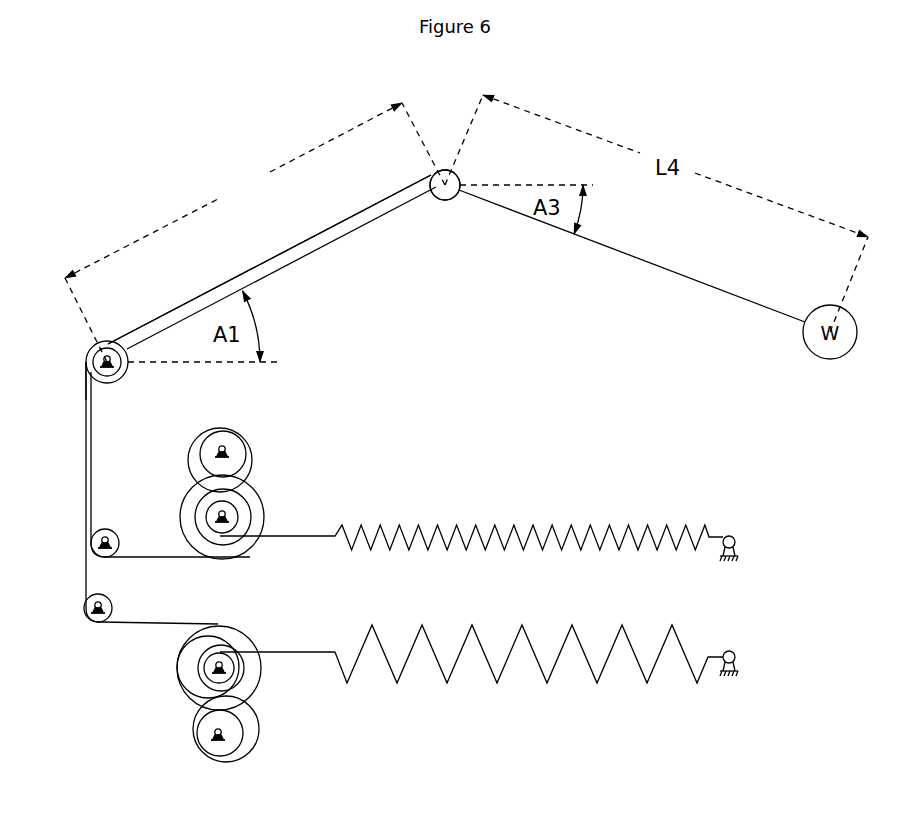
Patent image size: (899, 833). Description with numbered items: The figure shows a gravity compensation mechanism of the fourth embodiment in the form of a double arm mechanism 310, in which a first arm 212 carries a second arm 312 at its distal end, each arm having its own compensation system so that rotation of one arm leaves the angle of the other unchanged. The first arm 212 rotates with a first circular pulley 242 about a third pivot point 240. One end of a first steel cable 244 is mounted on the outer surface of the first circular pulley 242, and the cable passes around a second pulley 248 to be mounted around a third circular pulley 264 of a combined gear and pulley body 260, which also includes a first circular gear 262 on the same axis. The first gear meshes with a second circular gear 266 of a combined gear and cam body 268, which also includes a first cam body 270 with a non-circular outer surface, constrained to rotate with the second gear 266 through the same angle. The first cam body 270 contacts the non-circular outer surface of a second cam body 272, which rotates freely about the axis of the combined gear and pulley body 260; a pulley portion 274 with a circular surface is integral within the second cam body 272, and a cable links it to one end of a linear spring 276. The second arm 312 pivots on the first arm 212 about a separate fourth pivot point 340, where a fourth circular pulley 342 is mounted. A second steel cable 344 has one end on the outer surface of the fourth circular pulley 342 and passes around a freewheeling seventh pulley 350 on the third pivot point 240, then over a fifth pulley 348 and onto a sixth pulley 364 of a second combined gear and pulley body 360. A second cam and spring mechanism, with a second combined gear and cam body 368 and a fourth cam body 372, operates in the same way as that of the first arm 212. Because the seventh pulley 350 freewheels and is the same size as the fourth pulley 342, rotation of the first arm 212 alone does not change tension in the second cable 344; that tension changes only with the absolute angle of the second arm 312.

The double arm mechanism 310 is at (188, 237).
The second arm 312 is at (640, 261).
The fourth pivot point 340 is at (448, 183).
The fourth circular pulley 342 is at (437, 172).
The second steel cable 344 is at (268, 259).
The first arm 212 is at (312, 253).
The first circular pulley 242 is at (88, 351).
The third pivot point 240 is at (113, 368).
The seventh pulley 350 is at (85, 365).
The first steel cable 244 is at (85, 413).
The second combined gear and cam body 368 is at (247, 437).
The sixth pulley 364 is at (193, 487).
The second combined gear and pulley body 360 is at (267, 505).
The fourth cam body 372 is at (198, 532).
The fifth pulley 348 is at (107, 559).
The second pulley 248 is at (85, 610).
The first circular gear 262 is at (252, 633).
The second cam body 272 is at (192, 657).
The combined gear and pulley body 260 is at (253, 668).
The third circular pulley 264 is at (177, 672).
The pulley portion 274 is at (210, 675).
The linear spring 276 is at (529, 638).
The second circular gear 266 is at (197, 743).
The first cam body 270 is at (258, 728).
The combined gear and cam body 268 is at (245, 748).